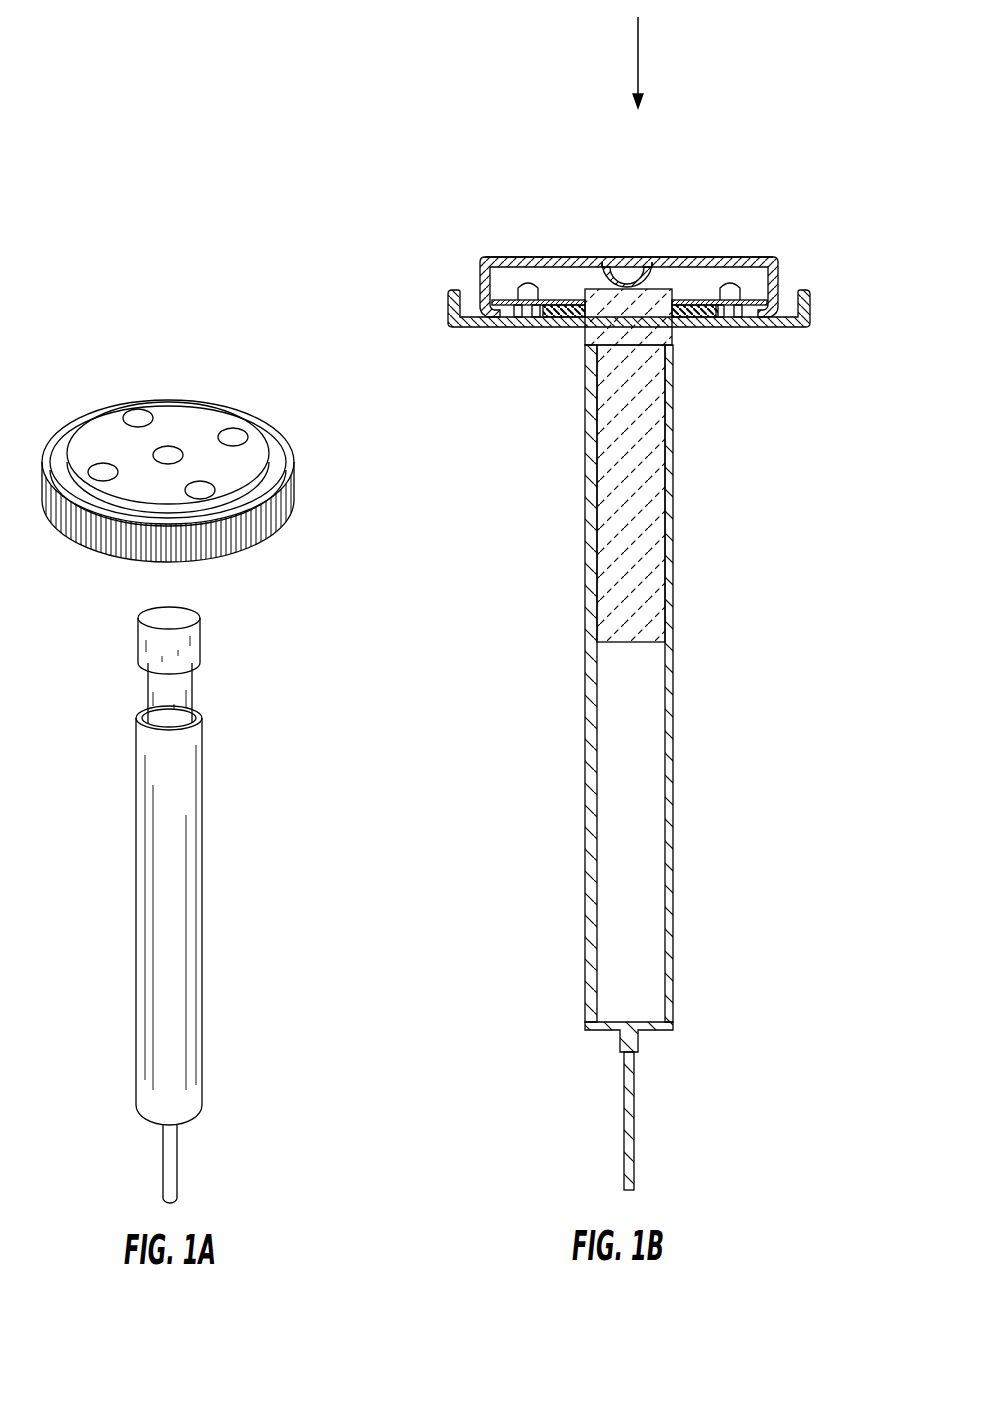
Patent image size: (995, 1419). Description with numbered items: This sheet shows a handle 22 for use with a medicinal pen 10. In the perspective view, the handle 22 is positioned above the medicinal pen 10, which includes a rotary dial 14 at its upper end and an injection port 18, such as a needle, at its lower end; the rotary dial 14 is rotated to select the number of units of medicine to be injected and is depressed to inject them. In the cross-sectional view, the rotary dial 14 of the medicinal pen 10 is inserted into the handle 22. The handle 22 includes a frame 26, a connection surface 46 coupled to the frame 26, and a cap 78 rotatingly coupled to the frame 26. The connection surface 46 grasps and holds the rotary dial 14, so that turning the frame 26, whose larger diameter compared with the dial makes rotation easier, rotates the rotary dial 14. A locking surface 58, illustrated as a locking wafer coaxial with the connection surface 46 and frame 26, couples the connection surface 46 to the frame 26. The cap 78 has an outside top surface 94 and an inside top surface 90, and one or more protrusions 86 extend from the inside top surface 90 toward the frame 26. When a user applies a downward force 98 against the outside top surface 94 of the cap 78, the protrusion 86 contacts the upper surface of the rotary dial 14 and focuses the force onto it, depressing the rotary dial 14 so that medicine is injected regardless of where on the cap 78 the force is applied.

In FIG. 1A, the medicinal pen 10 is at (212, 865).
In FIG. 1B, the medicinal pen 10 is at (580, 720).
In FIG. 1A, the rotary dial 14 is at (204, 639).
In FIG. 1B, the rotary dial 14 is at (577, 336).
In FIG. 1A, the injection port 18 is at (177, 1165).
In FIG. 1B, the injection port 18 is at (634, 1108).
In FIG. 1A, the handle 22 is at (318, 450).
In FIG. 1B, the handle 22 is at (603, 286).
In FIG. 1B, the frame 26 is at (812, 311).
In FIG. 1B, the connection surface 46 is at (548, 323).
In FIG. 1B, the locking surface 58 is at (730, 301).
In FIG. 1B, the cap 78 is at (480, 266).
In FIG. 1B, the protrusion 86 is at (734, 262).
In FIG. 1B, the inside top surface 90 is at (574, 261).
In FIG. 1B, the outside top surface 94 is at (535, 256).
In FIG. 1B, the downward force 98 is at (640, 60).